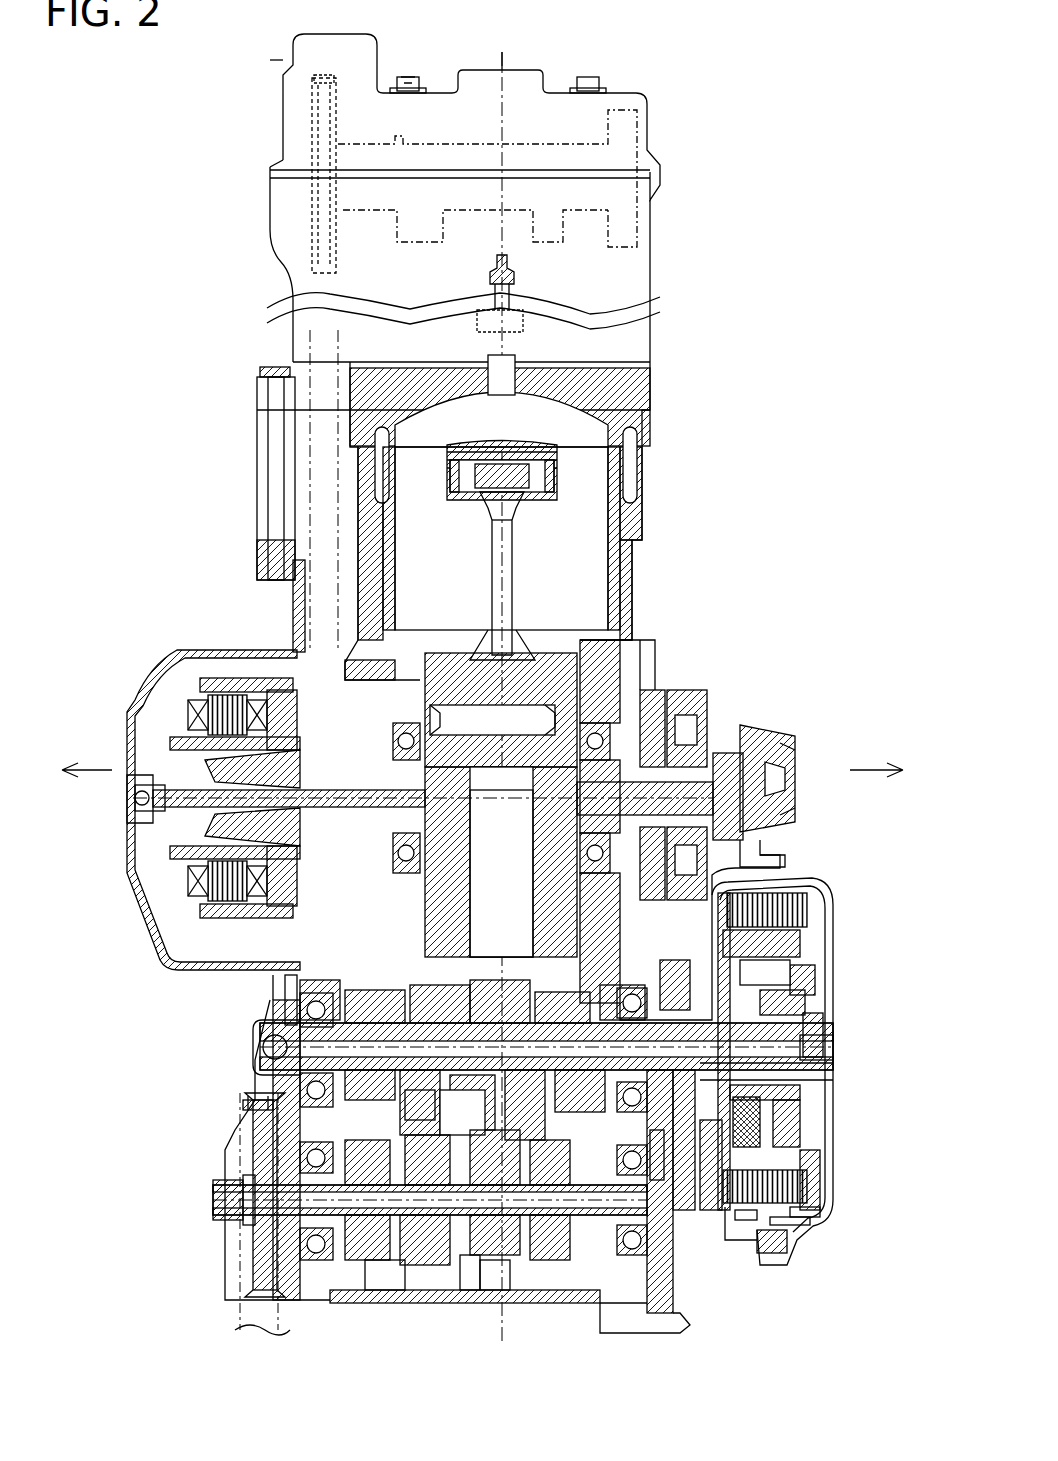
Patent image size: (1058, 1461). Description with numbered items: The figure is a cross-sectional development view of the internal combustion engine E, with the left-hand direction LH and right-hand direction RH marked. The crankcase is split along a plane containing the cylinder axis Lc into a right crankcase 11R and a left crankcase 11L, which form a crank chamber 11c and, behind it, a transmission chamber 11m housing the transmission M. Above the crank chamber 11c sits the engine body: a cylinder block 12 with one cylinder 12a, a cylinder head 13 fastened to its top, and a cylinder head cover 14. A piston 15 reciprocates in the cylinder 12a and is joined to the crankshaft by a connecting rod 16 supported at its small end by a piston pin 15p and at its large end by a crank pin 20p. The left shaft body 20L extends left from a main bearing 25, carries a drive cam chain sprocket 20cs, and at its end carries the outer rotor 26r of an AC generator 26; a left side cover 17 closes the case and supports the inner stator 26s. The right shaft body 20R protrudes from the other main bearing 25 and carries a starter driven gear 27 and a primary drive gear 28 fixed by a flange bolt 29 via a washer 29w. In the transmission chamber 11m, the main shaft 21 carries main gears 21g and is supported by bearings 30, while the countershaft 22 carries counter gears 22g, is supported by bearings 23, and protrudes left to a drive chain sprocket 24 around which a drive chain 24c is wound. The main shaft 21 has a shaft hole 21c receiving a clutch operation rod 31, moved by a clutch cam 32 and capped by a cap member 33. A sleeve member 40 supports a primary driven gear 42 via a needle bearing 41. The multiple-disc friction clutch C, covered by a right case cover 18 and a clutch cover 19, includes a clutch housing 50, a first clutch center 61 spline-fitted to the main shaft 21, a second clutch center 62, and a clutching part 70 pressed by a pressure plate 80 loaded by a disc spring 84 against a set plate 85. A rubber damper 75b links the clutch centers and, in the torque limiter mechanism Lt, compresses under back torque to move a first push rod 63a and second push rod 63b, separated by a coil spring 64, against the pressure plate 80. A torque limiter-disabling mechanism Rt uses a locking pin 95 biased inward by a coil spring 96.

The internal combustion engine E is at (200, 128).
The cylinder axis Lc is at (502, 48).
The cylinder head cover 14 is at (655, 132).
The cylinder head 13 is at (650, 254).
The cylinder block 12 is at (645, 477).
The cylinder 12a is at (608, 528).
The piston 15 is at (435, 447).
The piston pin 15p is at (548, 474).
The connecting rod 16 is at (490, 555).
The crank pin 20p is at (462, 652).
The left shaft body 20L is at (245, 692).
The right shaft body 20R is at (722, 740).
The drive cam chain sprocket 20cs is at (330, 760).
The main bearing 25 is at (395, 752).
The starter driven gear 27 is at (660, 700).
The primary drive gear 28 is at (690, 700).
The washer 29w is at (745, 762).
The flange bolt 29 is at (796, 780).
The right case cover 18 is at (760, 850).
The clutching part 70 is at (792, 878).
The multiple-disc friction clutch C is at (840, 960).
The left side cover 17 is at (130, 832).
The AC generator 26 is at (103, 945).
The inner stator 26s is at (205, 900).
The outer rotor 26r is at (240, 845).
The bearing 30 is at (320, 988).
The needle bearing 41 is at (678, 985).
The main gears 21g is at (430, 988).
The shaft hole 21c is at (352, 990).
The crank chamber 11c is at (512, 907).
The main shaft 21 is at (546, 1060).
The clutch operation rod 31 is at (445, 1112).
The clutch cam 32 is at (258, 1040).
The bearing 23 is at (318, 1262).
The countershaft 22 is at (445, 1252).
The counter gears 22g is at (390, 1295).
The drive chain sprocket 24 is at (262, 1270).
The drive chain 24c is at (240, 1104).
The left crankcase 11L is at (402, 1306).
The right crankcase 11R is at (542, 1310).
The transmission chamber 11m is at (555, 1302).
The transmission M is at (483, 1295).
The sleeve member 40 is at (657, 1180).
The primary driven gear 42 is at (690, 1210).
The coil spring 96 is at (822, 960).
The torque limiter-disabling mechanism Rt is at (822, 985).
The locking pin 95 is at (825, 1000).
The cap member 33 is at (815, 1030).
The clutch cover 19 is at (838, 1060).
The torque limiter mechanism Lt is at (838, 1066).
The pressure plate 80 is at (815, 1110).
The set plate 85 is at (818, 1127).
The disc spring 84 is at (805, 1160).
The coil spring 64 is at (800, 1178).
The first push rod 63a is at (805, 1192).
The second push rod 63b is at (812, 1216).
The second clutch center 62 is at (788, 1226).
The rubber damper 75b is at (770, 1254).
The first clutch center 61 is at (748, 1220).
The clutch housing 50 is at (738, 1220).
The left-hand direction LH is at (87, 785).
The right-hand direction RH is at (876, 785).